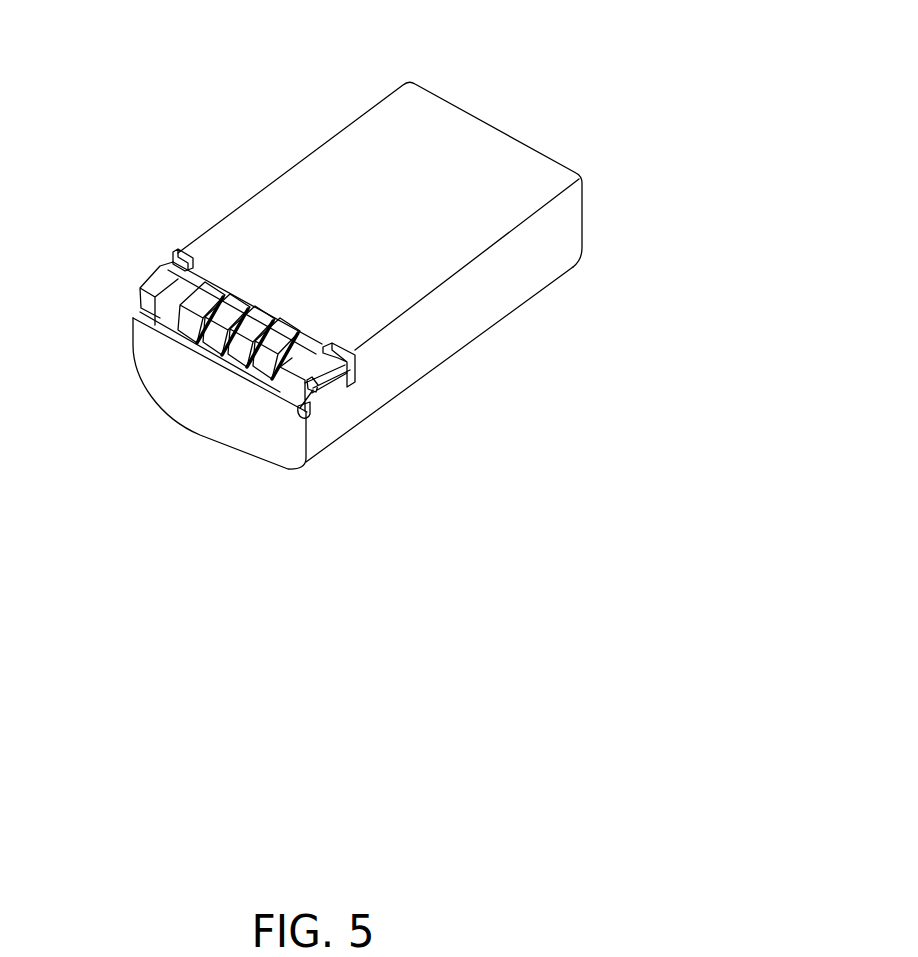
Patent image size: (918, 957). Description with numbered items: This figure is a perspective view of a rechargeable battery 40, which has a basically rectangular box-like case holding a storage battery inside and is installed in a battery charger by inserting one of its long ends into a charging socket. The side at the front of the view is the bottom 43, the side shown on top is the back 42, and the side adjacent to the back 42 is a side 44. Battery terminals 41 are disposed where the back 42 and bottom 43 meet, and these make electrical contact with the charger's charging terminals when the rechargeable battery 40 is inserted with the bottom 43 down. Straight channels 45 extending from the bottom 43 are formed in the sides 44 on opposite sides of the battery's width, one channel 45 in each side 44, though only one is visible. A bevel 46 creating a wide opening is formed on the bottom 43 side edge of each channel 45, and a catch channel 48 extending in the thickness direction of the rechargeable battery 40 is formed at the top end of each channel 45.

The rechargeable battery 40 is at (308, 276).
The battery terminals 41 is at (188, 318).
The back 42 is at (340, 148).
The bottom 43 is at (153, 383).
The side 44 is at (132, 322).
The channel 45 is at (333, 383).
The bevel 46 is at (138, 300).
The catch channel 48 is at (178, 251).